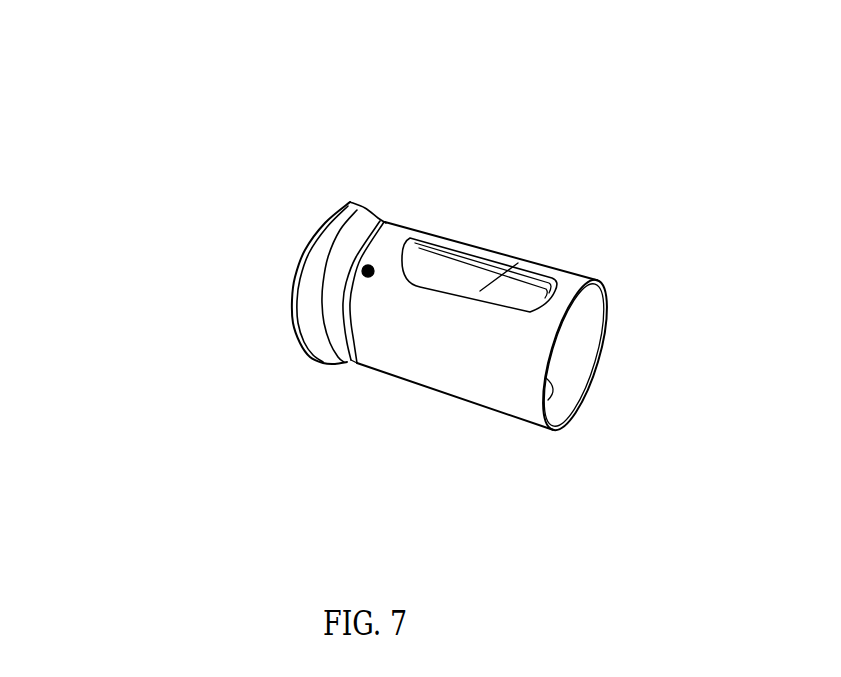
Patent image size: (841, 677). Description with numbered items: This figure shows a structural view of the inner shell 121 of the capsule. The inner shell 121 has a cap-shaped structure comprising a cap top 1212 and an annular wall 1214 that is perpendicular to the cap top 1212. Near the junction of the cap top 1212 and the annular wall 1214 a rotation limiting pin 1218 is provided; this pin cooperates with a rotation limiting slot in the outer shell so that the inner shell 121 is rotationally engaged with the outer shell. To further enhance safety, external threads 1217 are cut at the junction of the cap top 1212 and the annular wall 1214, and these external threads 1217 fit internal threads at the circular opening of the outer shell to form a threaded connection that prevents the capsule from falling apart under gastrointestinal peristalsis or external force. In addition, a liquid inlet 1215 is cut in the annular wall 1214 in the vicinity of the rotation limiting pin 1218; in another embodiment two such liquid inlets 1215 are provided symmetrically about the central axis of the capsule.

The inner shell 121 is at (458, 118).
The cap top 1212 is at (318, 287).
The annular wall 1214 is at (447, 365).
The liquid inlet 1215 is at (517, 262).
The external threads 1217 is at (345, 337).
The rotation limiting pin 1218 is at (364, 267).